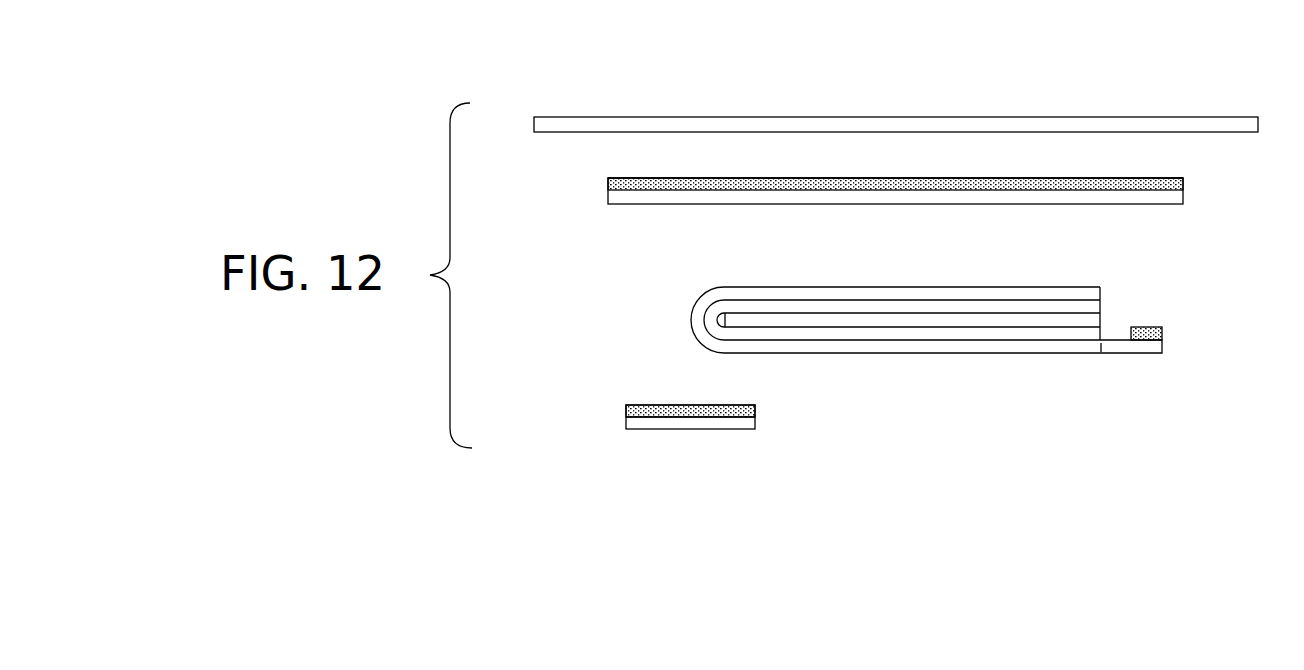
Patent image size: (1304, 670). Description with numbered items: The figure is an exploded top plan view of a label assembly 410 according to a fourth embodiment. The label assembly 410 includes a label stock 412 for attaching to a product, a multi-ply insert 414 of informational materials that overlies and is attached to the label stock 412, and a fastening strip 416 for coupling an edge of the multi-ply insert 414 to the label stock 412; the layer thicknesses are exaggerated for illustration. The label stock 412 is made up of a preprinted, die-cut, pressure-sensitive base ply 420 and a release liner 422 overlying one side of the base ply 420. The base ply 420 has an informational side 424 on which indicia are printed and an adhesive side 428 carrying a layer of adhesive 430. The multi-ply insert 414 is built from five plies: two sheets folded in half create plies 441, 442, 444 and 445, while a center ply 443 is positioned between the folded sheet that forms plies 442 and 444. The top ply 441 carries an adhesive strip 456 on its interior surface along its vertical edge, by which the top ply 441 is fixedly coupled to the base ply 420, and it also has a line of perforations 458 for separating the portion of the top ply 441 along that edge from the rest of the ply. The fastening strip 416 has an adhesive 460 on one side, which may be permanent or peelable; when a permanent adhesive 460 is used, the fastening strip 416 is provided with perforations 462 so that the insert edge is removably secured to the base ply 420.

The label assembly 410 is at (556, 49).
The label stock 412 is at (520, 214).
The multi-ply insert 414 is at (980, 328).
The fastening strip 416 is at (641, 459).
The base ply 420 is at (945, 200).
The release liner 422 is at (1047, 116).
The informational side 424 is at (1018, 204).
The adhesive side 428 is at (960, 188).
The layer of adhesive 430 is at (1128, 177).
The top ply 441 is at (1162, 352).
The ply 442 is at (1100, 333).
The center ply 443 is at (1100, 321).
The ply 444 is at (1100, 310).
The ply 445 is at (1100, 287).
The adhesive strip 456 is at (1162, 335).
The perforations 458 is at (1103, 343).
The adhesive 460 is at (626, 413).
The perforations 462 is at (700, 426).